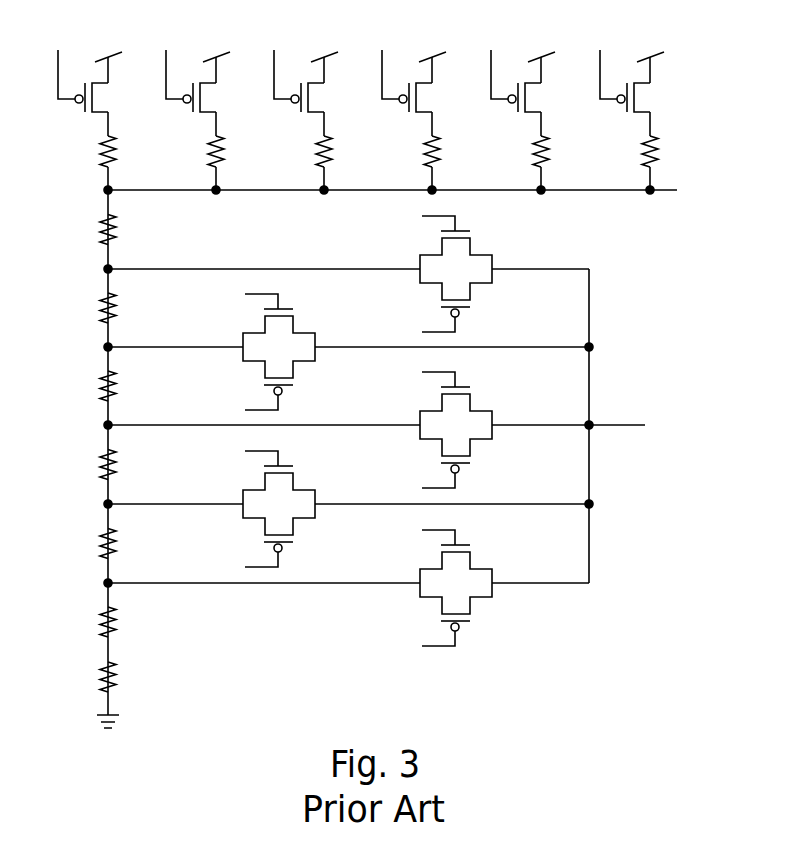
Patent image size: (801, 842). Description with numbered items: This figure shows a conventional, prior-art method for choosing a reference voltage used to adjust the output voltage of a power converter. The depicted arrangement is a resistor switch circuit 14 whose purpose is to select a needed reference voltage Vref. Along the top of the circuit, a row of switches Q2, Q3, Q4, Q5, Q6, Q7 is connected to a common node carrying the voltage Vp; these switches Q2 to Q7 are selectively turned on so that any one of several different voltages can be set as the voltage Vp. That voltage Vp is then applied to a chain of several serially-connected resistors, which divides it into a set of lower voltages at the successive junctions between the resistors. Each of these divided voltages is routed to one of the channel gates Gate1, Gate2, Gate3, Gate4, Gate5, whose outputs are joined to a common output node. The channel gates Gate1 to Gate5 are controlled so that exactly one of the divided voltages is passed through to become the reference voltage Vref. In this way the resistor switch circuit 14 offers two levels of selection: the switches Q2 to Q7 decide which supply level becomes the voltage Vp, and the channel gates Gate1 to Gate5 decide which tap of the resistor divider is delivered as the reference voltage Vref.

The resistor switch circuit 14 is at (419, 389).
The switch Q2 is at (101, 122).
The switch Q3 is at (209, 122).
The switch Q4 is at (317, 122).
The switch Q5 is at (425, 122).
The switch Q6 is at (534, 122).
The switch Q7 is at (643, 122).
The channel gate Gate1 is at (483, 274).
The channel gate Gate2 is at (306, 352).
The channel gate Gate3 is at (483, 430).
The channel gate Gate4 is at (306, 509).
The channel gate Gate5 is at (483, 588).
The voltage Vp is at (369, 188).
The reference voltage Vref is at (647, 428).